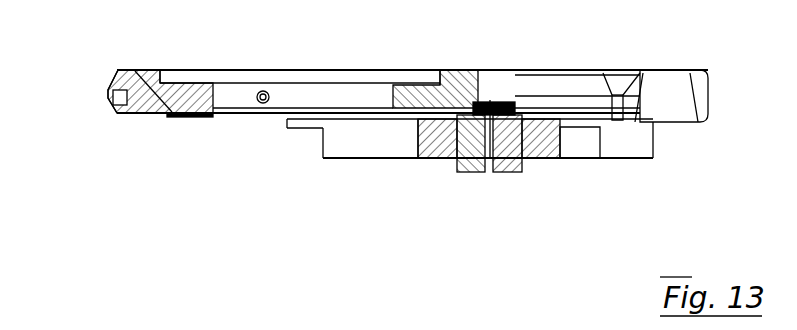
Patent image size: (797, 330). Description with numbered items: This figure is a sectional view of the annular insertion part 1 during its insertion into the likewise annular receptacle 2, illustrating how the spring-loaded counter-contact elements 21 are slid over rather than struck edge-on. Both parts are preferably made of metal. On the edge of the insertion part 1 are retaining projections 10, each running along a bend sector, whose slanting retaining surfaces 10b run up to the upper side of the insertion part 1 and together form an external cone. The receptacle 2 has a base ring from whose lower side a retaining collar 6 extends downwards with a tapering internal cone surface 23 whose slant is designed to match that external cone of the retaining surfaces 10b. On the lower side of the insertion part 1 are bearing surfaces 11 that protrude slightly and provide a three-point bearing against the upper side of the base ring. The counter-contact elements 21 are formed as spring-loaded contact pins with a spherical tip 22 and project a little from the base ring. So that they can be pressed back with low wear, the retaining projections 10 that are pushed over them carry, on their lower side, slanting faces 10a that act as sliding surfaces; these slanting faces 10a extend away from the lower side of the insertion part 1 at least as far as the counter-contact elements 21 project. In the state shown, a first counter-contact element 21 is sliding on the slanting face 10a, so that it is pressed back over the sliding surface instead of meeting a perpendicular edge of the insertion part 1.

The insertion part 1 is at (205, 72).
The receptacle 2 is at (655, 148).
The retaining collar 6 is at (697, 72).
The retaining projection 10 is at (110, 97).
The slanting face 10a is at (118, 115).
The retaining surface 10b is at (116, 70).
The bearing surface 11 is at (169, 118).
The counter-contact element 21 is at (472, 172).
The spherical tip 22 is at (607, 78).
The internal cone surface 23 is at (603, 160).